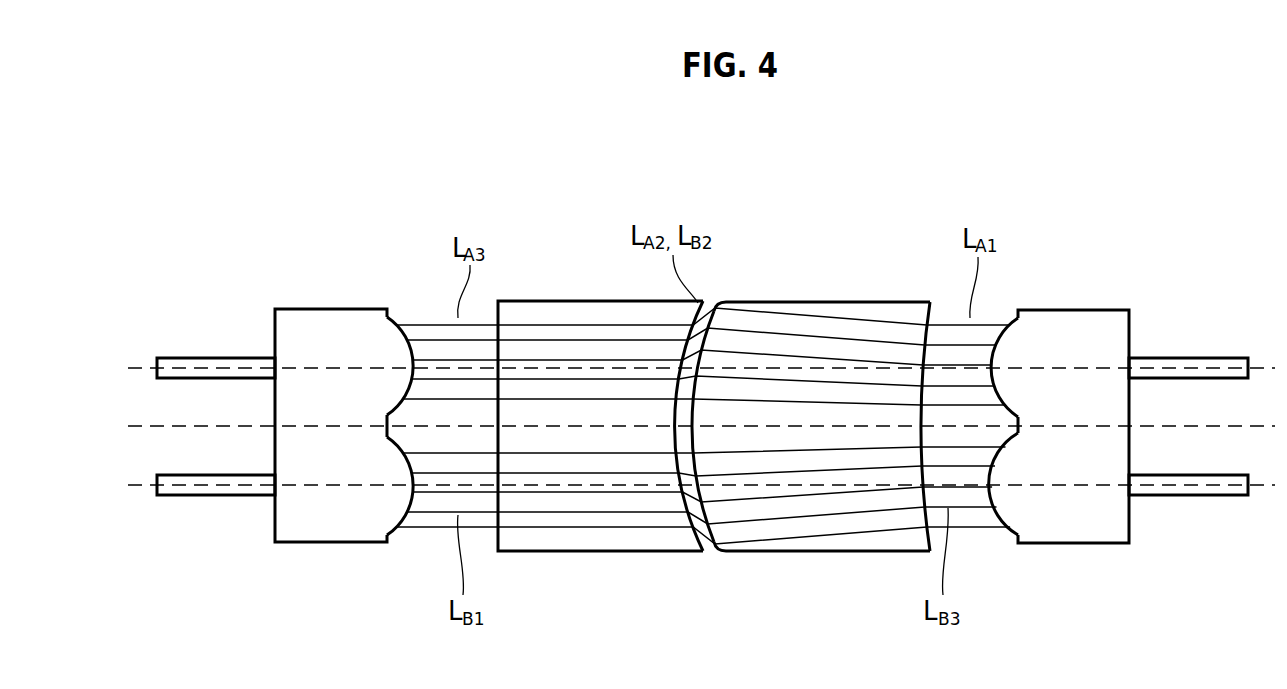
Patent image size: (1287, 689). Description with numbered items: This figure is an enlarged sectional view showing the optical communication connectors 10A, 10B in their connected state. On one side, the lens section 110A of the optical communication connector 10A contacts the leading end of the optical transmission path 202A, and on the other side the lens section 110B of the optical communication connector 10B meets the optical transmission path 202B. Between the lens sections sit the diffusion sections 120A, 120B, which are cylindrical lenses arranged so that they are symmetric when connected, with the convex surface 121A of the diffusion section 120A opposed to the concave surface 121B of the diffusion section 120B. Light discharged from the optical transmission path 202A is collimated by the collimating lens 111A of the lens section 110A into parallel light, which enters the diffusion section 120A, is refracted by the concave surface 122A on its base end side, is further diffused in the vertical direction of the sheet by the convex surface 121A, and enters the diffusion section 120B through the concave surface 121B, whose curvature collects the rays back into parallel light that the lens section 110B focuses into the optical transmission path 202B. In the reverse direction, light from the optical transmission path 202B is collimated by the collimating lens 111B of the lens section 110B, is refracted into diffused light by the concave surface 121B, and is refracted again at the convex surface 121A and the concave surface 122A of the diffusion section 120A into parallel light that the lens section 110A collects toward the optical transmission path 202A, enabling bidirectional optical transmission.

The optical communication connector 10A is at (1030, 175).
The optical communication connector 10B is at (385, 198).
The lens section 110A is at (1075, 537).
The lens section 110B is at (300, 527).
The collimating lens 111A is at (1003, 316).
The collimating lens 111B is at (410, 312).
The diffusion section 120A is at (835, 542).
The diffusion section 120B is at (625, 543).
The convex surface 121A is at (718, 304).
The concave surface 121B is at (713, 547).
The concave surface 122A is at (946, 310).
The optical transmission path 202A is at (1188, 356).
The optical transmission path 202B is at (216, 356).